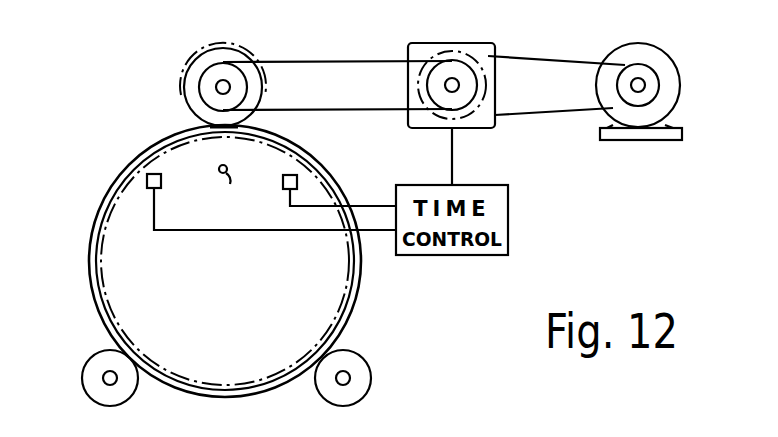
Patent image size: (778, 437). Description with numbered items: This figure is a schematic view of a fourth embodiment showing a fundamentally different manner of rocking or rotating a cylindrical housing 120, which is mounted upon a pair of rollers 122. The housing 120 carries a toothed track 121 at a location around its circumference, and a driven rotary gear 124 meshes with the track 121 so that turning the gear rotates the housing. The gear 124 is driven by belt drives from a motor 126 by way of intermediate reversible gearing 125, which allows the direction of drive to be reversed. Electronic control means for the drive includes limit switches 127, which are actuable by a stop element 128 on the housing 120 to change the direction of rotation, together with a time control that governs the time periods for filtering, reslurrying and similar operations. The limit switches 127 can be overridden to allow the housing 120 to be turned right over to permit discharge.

The cylindrical housing 120 is at (110, 163).
The toothed track 121 is at (93, 212).
The rollers 122 is at (82, 377).
The driven rotary gear 124 is at (184, 86).
The intermediate reversible gearing 125 is at (448, 51).
The motor 126 is at (663, 56).
The limit switches 127 is at (162, 181).
The stop element 128 is at (241, 188).